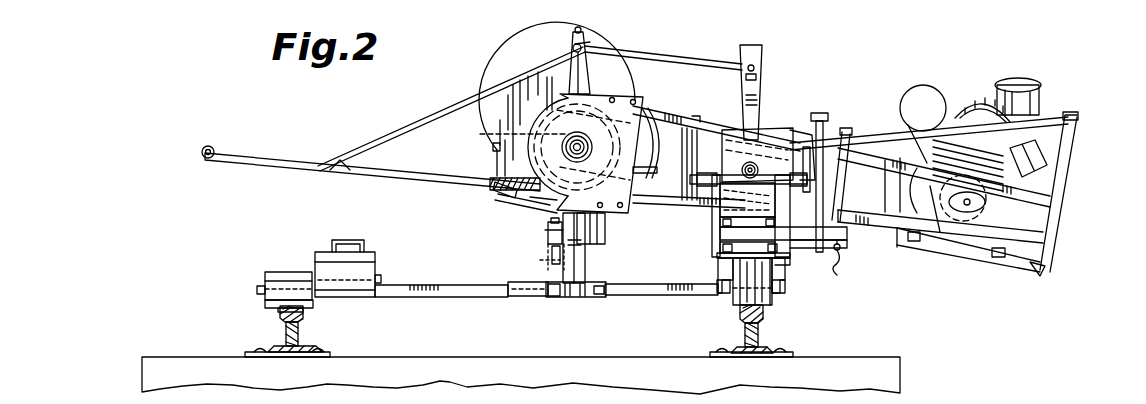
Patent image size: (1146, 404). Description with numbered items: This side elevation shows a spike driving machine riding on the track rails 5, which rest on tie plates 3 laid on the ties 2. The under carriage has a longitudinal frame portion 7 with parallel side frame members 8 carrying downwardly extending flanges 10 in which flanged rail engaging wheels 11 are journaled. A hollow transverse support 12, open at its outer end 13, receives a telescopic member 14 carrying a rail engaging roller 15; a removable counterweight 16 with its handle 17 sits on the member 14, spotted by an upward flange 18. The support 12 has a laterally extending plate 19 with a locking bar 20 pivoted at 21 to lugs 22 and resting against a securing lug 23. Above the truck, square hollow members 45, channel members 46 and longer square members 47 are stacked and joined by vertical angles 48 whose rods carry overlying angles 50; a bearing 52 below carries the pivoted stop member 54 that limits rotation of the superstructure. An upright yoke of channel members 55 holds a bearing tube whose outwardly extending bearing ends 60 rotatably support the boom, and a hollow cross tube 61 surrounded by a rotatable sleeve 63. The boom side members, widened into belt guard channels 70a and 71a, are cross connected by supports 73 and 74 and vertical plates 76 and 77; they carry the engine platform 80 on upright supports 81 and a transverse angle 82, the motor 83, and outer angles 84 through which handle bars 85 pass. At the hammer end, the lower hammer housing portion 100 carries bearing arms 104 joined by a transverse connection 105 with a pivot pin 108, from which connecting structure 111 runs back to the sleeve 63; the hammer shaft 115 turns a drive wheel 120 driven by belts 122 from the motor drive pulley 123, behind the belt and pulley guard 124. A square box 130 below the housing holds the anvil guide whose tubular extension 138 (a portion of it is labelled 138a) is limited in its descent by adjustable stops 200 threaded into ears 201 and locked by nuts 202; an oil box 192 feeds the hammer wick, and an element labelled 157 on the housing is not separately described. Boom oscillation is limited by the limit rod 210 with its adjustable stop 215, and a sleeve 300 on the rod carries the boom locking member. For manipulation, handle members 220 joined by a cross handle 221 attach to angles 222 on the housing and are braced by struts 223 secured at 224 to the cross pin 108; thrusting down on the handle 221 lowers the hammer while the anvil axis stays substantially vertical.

The ties 2 is at (161, 357).
The tie plates 3 is at (245, 352).
The track rails 5 is at (280, 313).
The frame portion 7 is at (712, 255).
The side frame members 8 is at (718, 271).
The bearings or flanges 10 is at (720, 294).
The flanged rail engaging wheels 11 is at (768, 300).
The transverse support 12 is at (660, 296).
The outer end opening 13 is at (512, 296).
The telescopic member 14 is at (438, 298).
The rail engaging roller 15 is at (283, 272).
The removable counterweight 16 is at (370, 260).
The handle 17 is at (352, 240).
The upward extension or flange 18 is at (382, 278).
The laterally extending plate 19 is at (567, 297).
The locking bar or plate 20 is at (583, 297).
The pivot 21 is at (553, 297).
The lugs 22 is at (548, 292).
The securing lug or flange 23 is at (600, 294).
The square hollow tubular members 45 is at (720, 248).
The channel members 46 is at (788, 265).
The transversely extending square hollow members 47 is at (720, 233).
The vertical elements 48 is at (787, 258).
The overlying angles 50 is at (748, 171).
The bearing 52 is at (841, 248).
The stop member 54 is at (838, 275).
The channel members of upright yoke 55 is at (758, 52).
The bearing end 60 is at (745, 166).
The hollow cross shaft or tube 61 is at (756, 70).
The rotatable sleeve 63 is at (758, 78).
The guard channel 70a is at (658, 110).
The guard channel 71a is at (655, 208).
The connecting supports 73 is at (695, 115).
The cross channel 74 is at (690, 122).
The vertical connecting plate 76 is at (690, 215).
The vertical connecting plate 77 is at (798, 140).
The engine platform 80 is at (970, 262).
The upright supports 81 is at (1035, 270).
The transversely extending angle 82 is at (897, 247).
The motor structure 83 is at (962, 95).
The outer upwardly extending angles 84 is at (1077, 113).
The rods or handle bars 85 is at (878, 140).
The lower portion of hammer housing 100 is at (525, 210).
The arm or side frame portion 104 is at (570, 60).
The transverse connection 105 is at (580, 27).
The pivot pin 108 is at (590, 42).
The connecting structure 111 is at (673, 57).
The hammer shaft 115 is at (576, 141).
The drive wheel 120 is at (508, 135).
The drive belts 122 is at (872, 168).
The drive pulley 123 is at (957, 235).
The belt and pulley guard 124 is at (618, 98).
The square box 130 is at (600, 231).
The tubular downward extension 138 is at (585, 270).
The column collar 138a is at (581, 256).
The drum housing 157 is at (500, 119).
The oil box 192 is at (495, 194).
The adjustable stops 200 is at (548, 255).
The flanges or ears 201 is at (548, 232).
The nut 202 is at (545, 230).
The limit pin or rod 210 is at (823, 125).
The adjustable stop 215 is at (822, 112).
The handle members 220 is at (285, 160).
The cross handle member 221 is at (207, 146).
The angles 222 is at (490, 178).
The handle supporting struts 223 is at (426, 120).
The strut securing point 224 is at (574, 45).
The sleeve 300 is at (807, 173).